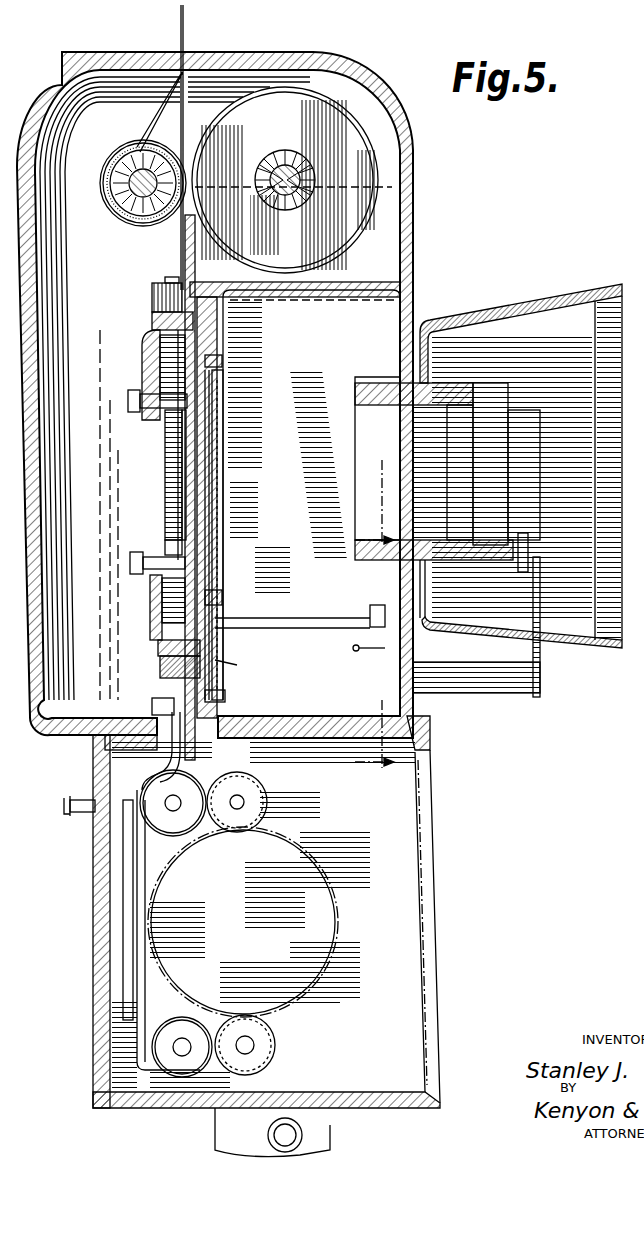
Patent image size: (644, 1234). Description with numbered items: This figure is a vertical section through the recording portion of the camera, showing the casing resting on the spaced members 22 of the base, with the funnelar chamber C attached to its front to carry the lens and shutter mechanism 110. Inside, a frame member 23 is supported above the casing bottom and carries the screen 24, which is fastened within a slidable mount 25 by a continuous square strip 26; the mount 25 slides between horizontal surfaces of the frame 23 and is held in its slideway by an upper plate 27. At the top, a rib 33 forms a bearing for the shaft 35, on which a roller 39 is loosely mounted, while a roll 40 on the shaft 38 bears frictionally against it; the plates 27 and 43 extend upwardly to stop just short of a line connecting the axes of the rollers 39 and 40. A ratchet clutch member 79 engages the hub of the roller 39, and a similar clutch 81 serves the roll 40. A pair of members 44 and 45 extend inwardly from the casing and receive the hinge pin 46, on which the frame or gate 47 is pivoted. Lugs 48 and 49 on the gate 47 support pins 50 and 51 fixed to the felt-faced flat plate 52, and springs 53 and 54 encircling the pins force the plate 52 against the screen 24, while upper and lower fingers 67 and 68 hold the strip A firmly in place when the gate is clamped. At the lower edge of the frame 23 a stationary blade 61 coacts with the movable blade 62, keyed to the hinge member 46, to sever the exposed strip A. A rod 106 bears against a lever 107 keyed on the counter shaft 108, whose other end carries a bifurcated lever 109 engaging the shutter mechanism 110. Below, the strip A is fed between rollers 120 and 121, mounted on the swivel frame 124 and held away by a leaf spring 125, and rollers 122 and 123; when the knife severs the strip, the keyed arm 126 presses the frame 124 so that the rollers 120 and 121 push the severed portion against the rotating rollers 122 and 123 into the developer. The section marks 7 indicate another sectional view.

The strip of sensitized film or paper A is at (186, 34).
The funnelar chamber C is at (563, 312).
The section line 7 is at (373, 625).
The spaced members 22 is at (400, 810).
The frame member 23 is at (305, 300).
The screen 24 is at (212, 472).
The slidable mount 25 is at (222, 360).
The continuous square strip 26 is at (222, 378).
The upper plate 27 is at (185, 252).
The rib 33 is at (228, 78).
The shaft 35 is at (304, 166).
The shaft 38 is at (134, 195).
The roller 39 is at (400, 152).
The roll 40 is at (116, 160).
The guide plate 43 is at (200, 270).
The member 44 is at (152, 297).
The member 45 is at (162, 668).
The hinge pin 46 is at (168, 280).
The frame or gate 47 is at (176, 507).
The lug 48 is at (142, 372).
The lug 49 is at (152, 592).
The pin 50 is at (128, 404).
The pin 51 is at (130, 562).
The flat plate 52 is at (182, 478).
The spring 53 is at (165, 424).
The spring 54 is at (166, 548).
The blade 61 is at (238, 667).
The movable blade 62 is at (226, 697).
The upper finger 67 is at (160, 321).
The lower finger 68 is at (160, 648).
The clutch member 79 is at (272, 164).
The clutch 81 is at (128, 186).
The rod 106 is at (380, 616).
The lever 107 is at (353, 651).
The counter shaft 108 is at (540, 688).
The bifurcated lever 109 is at (541, 652).
The shutter mechanism 110 is at (528, 542).
The roller 120 is at (95, 777).
The roller 121 is at (153, 1040).
The roller 122 is at (268, 802).
The roller 123 is at (276, 1046).
The swivel frame 124 is at (137, 880).
The leaf spring 125 is at (123, 972).
The keyed arm 126 is at (153, 707).